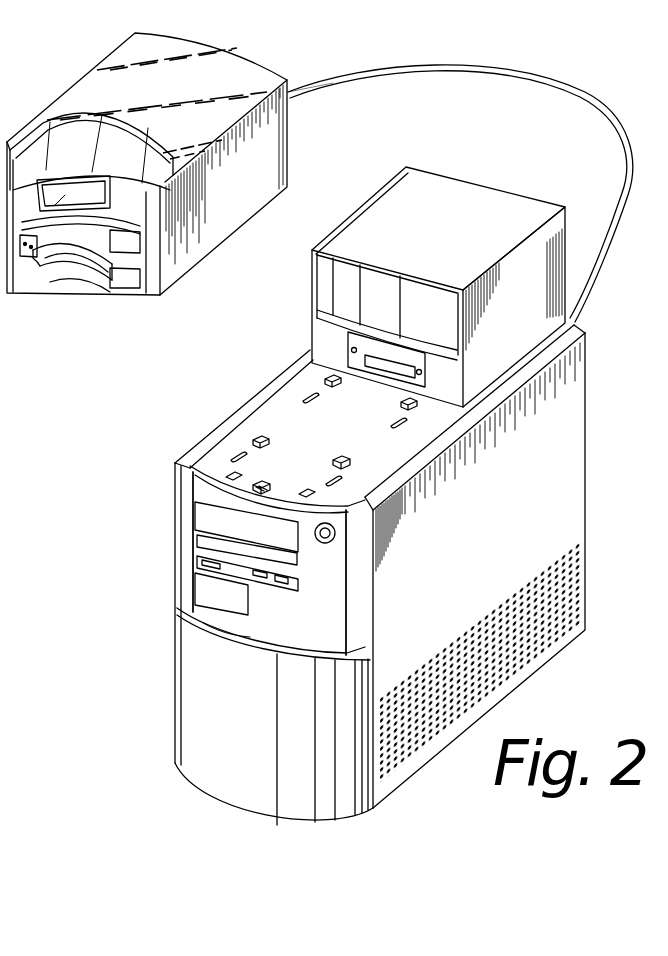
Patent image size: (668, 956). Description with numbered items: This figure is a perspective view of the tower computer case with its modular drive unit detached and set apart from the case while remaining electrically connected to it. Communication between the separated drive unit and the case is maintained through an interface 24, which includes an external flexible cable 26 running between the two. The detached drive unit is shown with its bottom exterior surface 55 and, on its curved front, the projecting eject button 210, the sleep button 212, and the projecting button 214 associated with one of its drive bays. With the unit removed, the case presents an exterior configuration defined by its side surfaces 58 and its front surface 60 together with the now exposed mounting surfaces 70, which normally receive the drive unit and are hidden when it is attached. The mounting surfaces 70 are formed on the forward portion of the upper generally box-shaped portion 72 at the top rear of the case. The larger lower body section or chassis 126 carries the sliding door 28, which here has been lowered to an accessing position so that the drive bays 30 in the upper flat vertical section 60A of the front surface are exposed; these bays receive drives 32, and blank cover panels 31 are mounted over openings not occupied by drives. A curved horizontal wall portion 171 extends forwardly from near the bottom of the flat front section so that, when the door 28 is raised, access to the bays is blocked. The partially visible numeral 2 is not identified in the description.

The computer 2 is at (4, 72).
The interface 24 is at (340, 68).
The external flexible cable 26 is at (565, 86).
The sliding door 28 is at (205, 697).
The drive bays 30 is at (195, 588).
The blank cover panels 31 is at (253, 523).
The drives 32 is at (298, 578).
The bottom exterior surface 55 is at (187, 292).
The side surfaces 58 is at (13, 439).
The front surface 60 is at (342, 575).
The upper flat vertical section of the front surface 60A is at (336, 545).
The mounting surfaces 70 is at (328, 311).
The upper box-shaped portion 72 is at (488, 208).
The lower body section 126 is at (0, 380).
The curved horizontal wall portion 171 is at (243, 640).
The eject button 210 is at (88, 270).
The sleep button 212 is at (130, 287).
The projecting button 214 is at (80, 262).